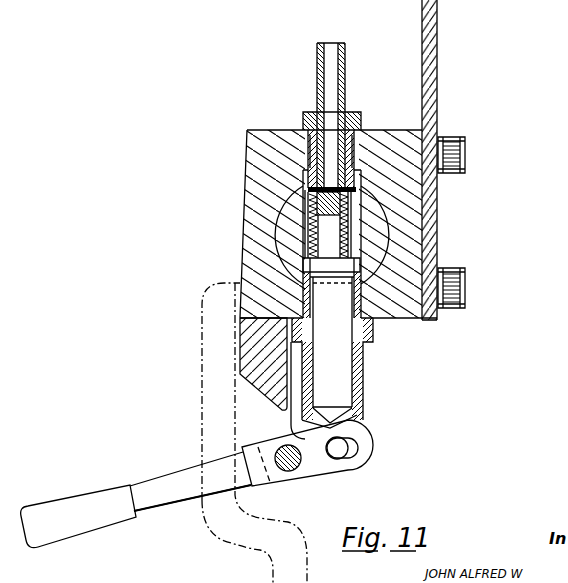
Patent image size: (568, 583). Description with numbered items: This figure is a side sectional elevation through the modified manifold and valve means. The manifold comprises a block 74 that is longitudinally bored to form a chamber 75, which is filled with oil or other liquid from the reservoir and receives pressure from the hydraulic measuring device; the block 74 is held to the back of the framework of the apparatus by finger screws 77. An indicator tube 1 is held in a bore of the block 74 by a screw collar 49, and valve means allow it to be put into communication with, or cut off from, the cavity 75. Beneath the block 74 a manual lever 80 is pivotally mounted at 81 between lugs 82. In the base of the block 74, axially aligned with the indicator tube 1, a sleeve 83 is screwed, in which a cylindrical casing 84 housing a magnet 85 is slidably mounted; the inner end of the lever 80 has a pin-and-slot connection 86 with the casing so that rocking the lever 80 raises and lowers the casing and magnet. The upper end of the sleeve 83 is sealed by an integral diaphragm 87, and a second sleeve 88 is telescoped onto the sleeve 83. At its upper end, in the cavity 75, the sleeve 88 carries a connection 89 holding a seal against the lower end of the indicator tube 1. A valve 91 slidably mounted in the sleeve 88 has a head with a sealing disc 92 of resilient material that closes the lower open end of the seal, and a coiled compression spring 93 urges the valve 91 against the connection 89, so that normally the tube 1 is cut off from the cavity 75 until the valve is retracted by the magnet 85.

The indicator tube 1 is at (317, 82).
The screw collar 49 is at (303, 115).
The block 74 is at (251, 172).
The chamber 75 is at (280, 248).
The finger screw 77 is at (455, 137).
The manual lever 80 is at (240, 455).
The pivot 81 is at (288, 472).
The lug 82 is at (205, 420).
The sleeve 83 is at (240, 363).
The cylindrical casing 84 is at (358, 388).
The magnet 85 is at (352, 368).
The pin-and-slot connection 86 is at (342, 470).
The integral diaphragm 87 is at (338, 280).
The second sleeve 88 is at (298, 222).
The connection 89 is at (308, 190).
The valve 91 is at (337, 246).
The sealing disc 92 is at (352, 200).
The coiled compression spring 93 is at (355, 221).